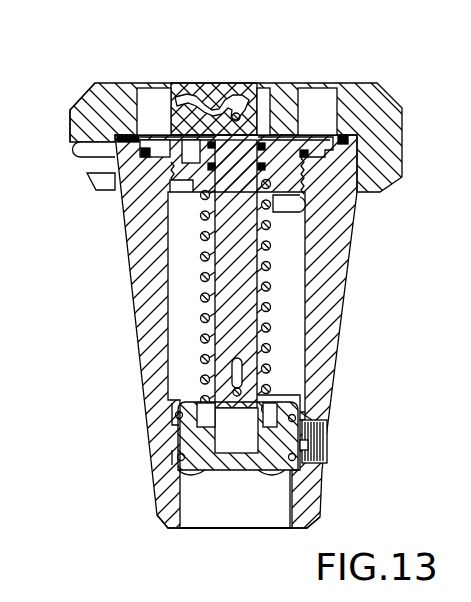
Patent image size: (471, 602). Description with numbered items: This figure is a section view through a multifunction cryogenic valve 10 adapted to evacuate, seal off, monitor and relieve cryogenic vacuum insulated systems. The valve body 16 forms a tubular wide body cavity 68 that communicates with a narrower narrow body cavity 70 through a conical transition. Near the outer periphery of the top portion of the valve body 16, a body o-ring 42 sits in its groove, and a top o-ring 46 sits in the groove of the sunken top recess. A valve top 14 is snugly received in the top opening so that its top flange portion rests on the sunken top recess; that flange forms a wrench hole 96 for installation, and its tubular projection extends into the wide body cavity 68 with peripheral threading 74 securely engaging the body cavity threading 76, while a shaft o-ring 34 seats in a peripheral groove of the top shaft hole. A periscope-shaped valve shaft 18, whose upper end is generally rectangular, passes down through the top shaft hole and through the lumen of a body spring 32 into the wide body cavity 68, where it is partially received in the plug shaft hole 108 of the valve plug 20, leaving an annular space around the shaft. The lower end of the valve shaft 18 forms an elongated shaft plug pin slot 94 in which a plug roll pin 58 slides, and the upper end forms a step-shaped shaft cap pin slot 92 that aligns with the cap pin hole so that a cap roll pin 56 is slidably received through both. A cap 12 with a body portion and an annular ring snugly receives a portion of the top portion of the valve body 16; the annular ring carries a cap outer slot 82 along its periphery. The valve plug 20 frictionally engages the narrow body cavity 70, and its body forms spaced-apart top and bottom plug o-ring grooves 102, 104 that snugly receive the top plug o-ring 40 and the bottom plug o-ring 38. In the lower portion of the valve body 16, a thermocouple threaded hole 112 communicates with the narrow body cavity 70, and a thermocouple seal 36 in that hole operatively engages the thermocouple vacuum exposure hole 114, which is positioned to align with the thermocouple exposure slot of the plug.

The multifunction cryogenic valve 10 is at (336, 44).
The cap 12 is at (347, 88).
The valve top 14 is at (302, 200).
The valve body 16 is at (342, 247).
The valve shaft 18 is at (226, 95).
The valve plug 20 is at (160, 495).
The body spring 32 is at (200, 258).
The shaft o-ring 34 is at (290, 150).
The thermocouple seal 36 is at (327, 430).
The bottom plug o-ring 38 is at (283, 450).
The top plug o-ring 40 is at (315, 418).
The body o-ring 42 is at (80, 102).
The top o-ring 46 is at (100, 183).
The cap roll pin 56 is at (259, 130).
The plug roll pin 58 is at (205, 390).
The wide body cavity 68 is at (170, 297).
The narrow body cavity 70 is at (280, 522).
The peripheral threading 74 is at (190, 196).
The body cavity threading 76 is at (305, 182).
The cap outer slot 82 is at (90, 152).
The shaft cap pin slot 92 is at (185, 97).
The shaft plug pin slot 94 is at (263, 342).
The wrench hole 96 is at (157, 137).
The top plug o-ring groove 102 is at (186, 403).
The bottom plug o-ring groove 104 is at (184, 440).
The plug shaft hole 108 is at (236, 480).
The thermocouple threaded hole 112 is at (312, 446).
The thermocouple vacuum exposure hole 114 is at (312, 478).